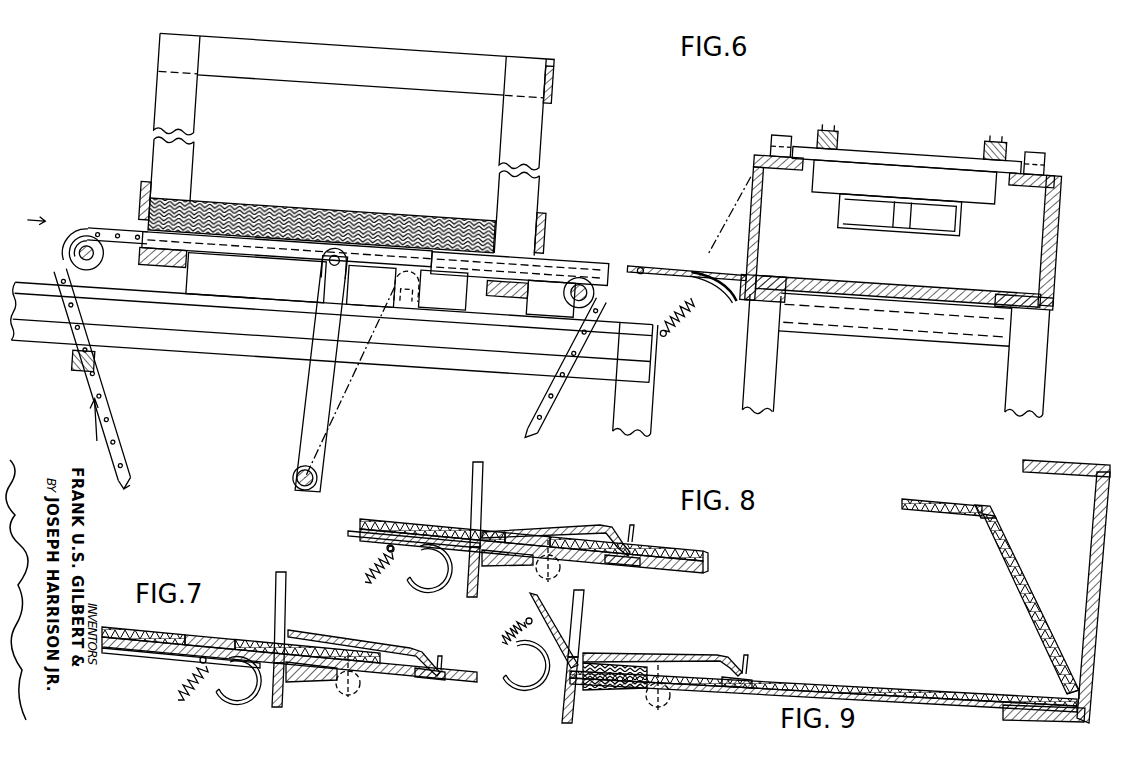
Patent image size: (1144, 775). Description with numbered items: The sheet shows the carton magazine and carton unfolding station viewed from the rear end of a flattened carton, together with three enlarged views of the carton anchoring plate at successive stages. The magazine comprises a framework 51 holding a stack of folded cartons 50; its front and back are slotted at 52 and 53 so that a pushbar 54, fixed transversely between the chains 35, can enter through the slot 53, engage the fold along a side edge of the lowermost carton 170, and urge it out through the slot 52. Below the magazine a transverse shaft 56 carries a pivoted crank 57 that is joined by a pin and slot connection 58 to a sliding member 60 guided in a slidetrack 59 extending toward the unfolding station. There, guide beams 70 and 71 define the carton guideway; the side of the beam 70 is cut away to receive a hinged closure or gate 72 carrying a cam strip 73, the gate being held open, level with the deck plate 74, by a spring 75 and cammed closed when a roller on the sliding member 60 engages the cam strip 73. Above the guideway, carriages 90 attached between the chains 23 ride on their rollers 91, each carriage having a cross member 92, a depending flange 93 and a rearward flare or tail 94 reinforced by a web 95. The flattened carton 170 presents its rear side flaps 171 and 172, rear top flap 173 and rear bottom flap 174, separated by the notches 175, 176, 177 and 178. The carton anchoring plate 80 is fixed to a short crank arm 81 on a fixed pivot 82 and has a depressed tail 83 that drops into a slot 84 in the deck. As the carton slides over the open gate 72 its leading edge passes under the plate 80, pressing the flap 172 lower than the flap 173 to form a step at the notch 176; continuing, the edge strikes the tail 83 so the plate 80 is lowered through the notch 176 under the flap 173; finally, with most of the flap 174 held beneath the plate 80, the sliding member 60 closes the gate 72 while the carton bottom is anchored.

In FIG. 6, the chains 23 is at (820, 127).
In FIG. 6, the chains 35 is at (545, 403).
In FIG. 6, the folded cartons 50 is at (305, 203).
In FIG. 6, the framework 51 is at (183, 157).
In FIG. 6, the slot 52 is at (543, 245).
In FIG. 6, the slot 53 is at (137, 213).
In FIG. 6, the pushbar 54 is at (85, 372).
In FIG. 6, the transverse shaft 56 is at (325, 478).
In FIG. 6, the crank 57 is at (313, 383).
In FIG. 6, the pin and slot connection 58 is at (327, 286).
In FIG. 6, the slidetrack 59 is at (437, 258).
In FIG. 6, the sliding member 60 is at (397, 270).
In FIG. 6, the guide beam 70 is at (764, 158).
In FIG. 6, the guide beam 71 is at (1049, 182).
In FIG. 9, the guide beam 71 is at (1098, 587).
In FIG. 6, the hinged closure or gate 72 is at (672, 268).
In FIG. 8, the hinged closure or gate 72 is at (355, 540).
In FIG. 7, the hinged closure or gate 72 is at (140, 660).
In FIG. 9, the hinged closure or gate 72 is at (528, 602).
In FIG. 6, the cam strip 73 is at (703, 300).
In FIG. 8, the cam strip 73 is at (406, 582).
In FIG. 7, the cam strip 73 is at (218, 698).
In FIG. 9, the cam strip 73 is at (512, 680).
In FIG. 6, the deck plate 74 is at (852, 285).
In FIG. 8, the deck plate 74 is at (664, 561).
In FIG. 7, the deck plate 74 is at (463, 676).
In FIG. 9, the deck plate 74 is at (768, 693).
In FIG. 6, the spring 75 is at (663, 333).
In FIG. 8, the spring 75 is at (363, 582).
In FIG. 7, the spring 75 is at (183, 695).
In FIG. 9, the spring 75 is at (505, 638).
In FIG. 8, the carton anchoring plate 80 is at (553, 528).
In FIG. 7, the carton anchoring plate 80 is at (327, 638).
In FIG. 9, the carton anchoring plate 80 is at (640, 657).
In FIG. 8, the short crank arm 81 is at (561, 568).
In FIG. 7, the short crank arm 81 is at (352, 690).
In FIG. 9, the short crank arm 81 is at (670, 687).
In FIG. 8, the fixed pivot 82 is at (537, 569).
In FIG. 7, the fixed pivot 82 is at (340, 690).
In FIG. 9, the fixed pivot 82 is at (648, 702).
In FIG. 8, the depressed tail 83 is at (622, 535).
In FIG. 7, the depressed tail 83 is at (422, 662).
In FIG. 9, the depressed tail 83 is at (732, 670).
In FIG. 8, the slot 84 is at (640, 566).
In FIG. 7, the slot 84 is at (435, 668).
In FIG. 9, the slot 84 is at (730, 688).
In FIG. 6, the carriages 90 is at (972, 217).
In FIG. 6, the rollers 91 is at (777, 136).
In FIG. 6, the cross member 92 is at (857, 150).
In FIG. 6, the depending flange 93 is at (913, 172).
In FIG. 6, the flare or tail 94 is at (883, 220).
In FIG. 6, the web 95 is at (862, 199).
In FIG. 6, the lowermost carton 170 is at (283, 234).
In FIG. 6, the rear side flap 171 is at (230, 240).
In FIG. 6, the rear side flap 172 is at (450, 247).
In FIG. 8, the rear side flap 172 is at (660, 548).
In FIG. 7, the rear side flap 172 is at (205, 642).
In FIG. 9, the rear side flap 172 is at (1011, 565).
In FIG. 6, the rear top flap 173 is at (228, 248).
In FIG. 8, the rear top flap 173 is at (393, 520).
In FIG. 7, the rear top flap 173 is at (135, 632).
In FIG. 9, the rear top flap 173 is at (952, 489).
In FIG. 6, the rear bottom flap 174 is at (291, 250).
In FIG. 8, the rear bottom flap 174 is at (700, 566).
In FIG. 7, the rear bottom flap 174 is at (138, 645).
In FIG. 9, the rear bottom flap 174 is at (895, 682).
In FIG. 6, the notch 175 is at (150, 256).
In FIG. 6, the notch 176 is at (402, 227).
In FIG. 8, the notch 176 is at (500, 532).
In FIG. 7, the notch 176 is at (154, 641).
In FIG. 9, the notch 176 is at (987, 513).
In FIG. 6, the notch 177 is at (537, 262).
In FIG. 8, the notch 177 is at (704, 558).
In FIG. 9, the notch 177 is at (1073, 687).
In FIG. 6, the notch 178 is at (264, 232).